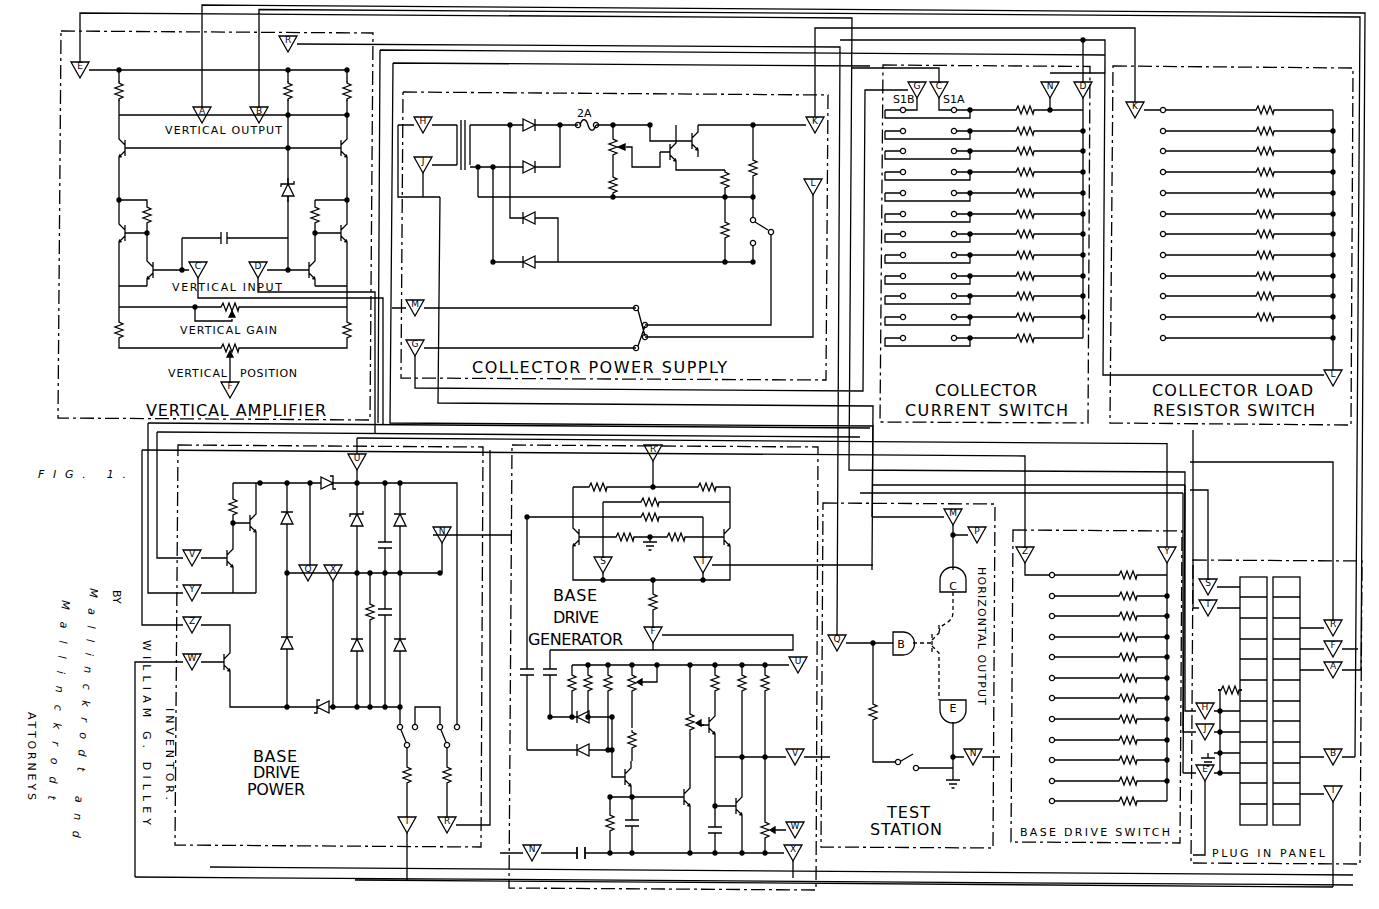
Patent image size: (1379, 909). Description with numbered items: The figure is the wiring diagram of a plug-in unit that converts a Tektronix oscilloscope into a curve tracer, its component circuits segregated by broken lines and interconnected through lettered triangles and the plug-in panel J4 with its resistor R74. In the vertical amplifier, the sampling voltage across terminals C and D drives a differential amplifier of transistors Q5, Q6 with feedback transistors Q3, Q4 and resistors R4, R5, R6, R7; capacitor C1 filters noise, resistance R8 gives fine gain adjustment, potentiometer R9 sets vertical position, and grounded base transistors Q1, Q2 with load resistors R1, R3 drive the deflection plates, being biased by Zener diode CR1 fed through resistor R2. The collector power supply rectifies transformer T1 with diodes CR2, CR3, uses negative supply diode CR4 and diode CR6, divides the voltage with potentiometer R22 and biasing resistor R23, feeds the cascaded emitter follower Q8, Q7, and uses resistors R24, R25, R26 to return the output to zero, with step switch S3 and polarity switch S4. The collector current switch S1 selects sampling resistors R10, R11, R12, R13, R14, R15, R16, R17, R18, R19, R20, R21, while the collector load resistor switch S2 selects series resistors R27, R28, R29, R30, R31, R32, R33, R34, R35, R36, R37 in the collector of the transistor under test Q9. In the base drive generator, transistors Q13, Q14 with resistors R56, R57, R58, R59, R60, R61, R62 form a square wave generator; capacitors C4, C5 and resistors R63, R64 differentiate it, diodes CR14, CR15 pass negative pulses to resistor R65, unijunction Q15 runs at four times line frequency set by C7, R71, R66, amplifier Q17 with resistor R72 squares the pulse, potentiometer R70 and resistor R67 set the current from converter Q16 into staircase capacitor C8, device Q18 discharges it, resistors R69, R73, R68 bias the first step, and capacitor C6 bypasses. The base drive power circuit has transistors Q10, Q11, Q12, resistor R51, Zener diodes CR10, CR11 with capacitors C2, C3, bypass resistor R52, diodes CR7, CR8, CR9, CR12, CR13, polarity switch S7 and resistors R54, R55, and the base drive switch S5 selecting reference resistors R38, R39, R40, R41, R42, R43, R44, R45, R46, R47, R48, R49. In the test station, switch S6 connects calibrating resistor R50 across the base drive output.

The load resistor R1 is at (127, 91).
The resistor R2 is at (296, 91).
The load resistor R3 is at (355, 91).
The resistor R4 is at (155, 215).
The resistor R5 is at (306, 215).
The resistor R6 is at (127, 330).
The resistor R7 is at (336, 330).
The gain adjustment resistance R8 is at (238, 310).
The vertical position potentiometer R9 is at (238, 352).
The grounded base transistor Q1 is at (116, 148).
The grounded base transistor Q2 is at (349, 148).
The feedback transistor Q3 is at (115, 233).
The feedback transistor Q4 is at (349, 233).
The differential amplifier transistor Q5 is at (144, 270).
The differential amplifier transistor Q6 is at (316, 270).
The Zener diode CR1 is at (275, 190).
The capacitor C1 is at (235, 234).
The transformer T1 is at (460, 138).
The rectifier diode CR2 is at (528, 119).
The rectifier diode CR3 is at (528, 161).
The negative power supply diode CR4 is at (528, 212).
The diode CR6 is at (528, 256).
The potentiometer R22 is at (600, 147).
The biasing resistor R23 is at (600, 185).
The resistor R24 is at (713, 180).
The resistor R25 is at (764, 168).
The resistor R26 is at (713, 230).
The series regulator transistor Q7 is at (686, 134).
The emitter follower transistor Q8 is at (662, 152).
The step switch S3 is at (770, 231).
The polarity switch S4 is at (649, 324).
The collector current switch S1 is at (937, 243).
The sampling resistor R10 is at (1025, 105).
The sampling resistor R11 is at (1025, 126).
The sampling resistor R12 is at (1025, 146).
The sampling resistor R13 is at (1025, 167).
The sampling resistor R14 is at (1025, 188).
The sampling resistor R15 is at (1025, 209).
The sampling resistor R16 is at (1025, 229).
The sampling resistor R17 is at (1025, 250).
The sampling resistor R18 is at (1025, 271).
The sampling resistor R19 is at (1025, 291).
The sampling resistor R20 is at (1025, 312).
The sampling resistor R21 is at (1025, 333).
The collector load resistor switch S2 is at (1194, 242).
The collector load resistor R27 is at (1265, 105).
The collector load resistor R28 is at (1265, 126).
The collector load resistor R29 is at (1265, 146).
The collector load resistor R30 is at (1265, 167).
The collector load resistor R31 is at (1265, 188).
The collector load resistor R32 is at (1265, 209).
The collector load resistor R33 is at (1265, 229).
The collector load resistor R34 is at (1265, 250).
The collector load resistor R35 is at (1265, 271).
The collector load resistor R36 is at (1265, 291).
The collector load resistor R37 is at (1265, 312).
The resistor R51 is at (221, 507).
The transistor Q10 is at (239, 558).
The input impedance transistor Q11 is at (261, 523).
The transistor Q12 is at (236, 662).
The diode CR7 is at (276, 643).
The diode CR8 is at (327, 476).
The diode CR9 is at (323, 700).
The Zener diode CR10 is at (342, 524).
The Zener diode CR11 is at (352, 650).
The diode CR12 is at (413, 515).
The diode CR13 is at (413, 649).
The capacitor C2 is at (384, 550).
The capacitor C3 is at (391, 611).
The bypass resistor R52 is at (357, 612).
The base polarity switch S7 is at (423, 727).
The resistor R54 is at (395, 775).
The resistor R55 is at (458, 775).
The resistor R56 is at (598, 480).
The resistor R57 is at (707, 480).
The positive feedback resistor R58 is at (661, 497).
The positive feedback resistor R59 is at (661, 512).
The resistor R60 is at (624, 530).
The resistor R61 is at (676, 530).
The resistor R62 is at (665, 602).
The differential amplifier transistor Q13 is at (572, 537).
The differential amplifier transistor Q14 is at (735, 537).
The capacitor C4 is at (524, 668).
The capacitor C5 is at (548, 668).
The resistor R63 is at (577, 683).
The resistor R64 is at (593, 683).
The resistor R65 is at (613, 683).
The frequency resistor R66 is at (637, 683).
The resistor R67 is at (720, 683).
The resistor R68 is at (747, 683).
The bias resistor R69 is at (770, 683).
The amplitude potentiometer R70 is at (677, 722).
The frequency resistor R71 is at (643, 740).
The resistor R72 is at (597, 823).
The adjustable bias resistor R73 is at (765, 830).
The bypass capacitor C6 is at (580, 846).
The timing capacitor C7 is at (639, 823).
The staircase capacitor C8 is at (708, 830).
The diode CR14 is at (570, 722).
The diode CR15 is at (570, 754).
The unijunction transistor Q15 is at (611, 777).
The voltage to current converter Q16 is at (720, 725).
The amplifier transistor Q17 is at (695, 797).
The breakdown device Q18 is at (748, 806).
The transistor under test Q9 is at (934, 646).
The calibrating resistor R50 is at (884, 712).
The switch S6 is at (907, 755).
The base drive switch S5 is at (1076, 696).
The reference resistor R38 is at (1128, 570).
The reference resistor R39 is at (1128, 591).
The reference resistor R40 is at (1128, 611).
The reference resistor R41 is at (1128, 632).
The reference resistor R42 is at (1128, 652).
The reference resistor R43 is at (1128, 673).
The reference resistor R44 is at (1128, 693).
The reference resistor R45 is at (1128, 714).
The reference resistor R46 is at (1128, 735).
The reference resistor R47 is at (1128, 755).
The reference resistor R48 is at (1128, 776).
The reference resistor R49 is at (1128, 796).
The plug-in panel connector J4 is at (1270, 711).
The resistor R74 is at (1227, 683).